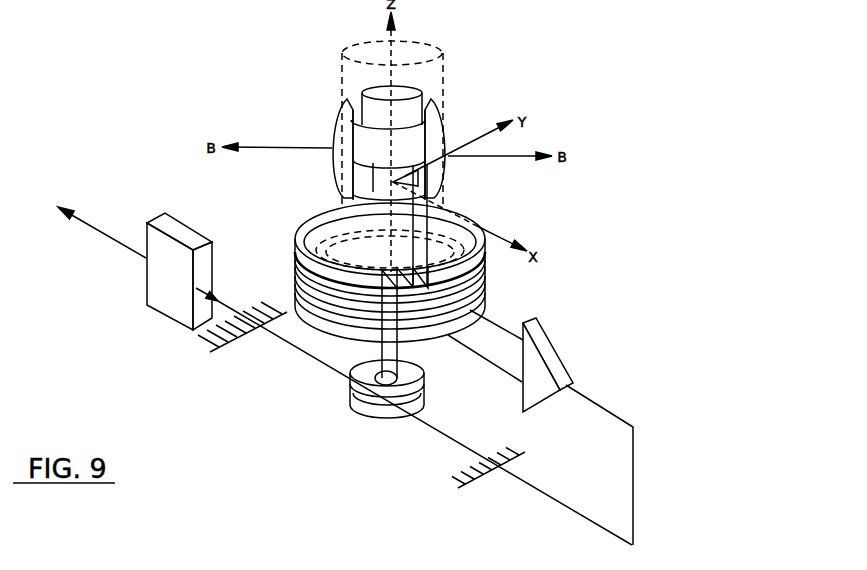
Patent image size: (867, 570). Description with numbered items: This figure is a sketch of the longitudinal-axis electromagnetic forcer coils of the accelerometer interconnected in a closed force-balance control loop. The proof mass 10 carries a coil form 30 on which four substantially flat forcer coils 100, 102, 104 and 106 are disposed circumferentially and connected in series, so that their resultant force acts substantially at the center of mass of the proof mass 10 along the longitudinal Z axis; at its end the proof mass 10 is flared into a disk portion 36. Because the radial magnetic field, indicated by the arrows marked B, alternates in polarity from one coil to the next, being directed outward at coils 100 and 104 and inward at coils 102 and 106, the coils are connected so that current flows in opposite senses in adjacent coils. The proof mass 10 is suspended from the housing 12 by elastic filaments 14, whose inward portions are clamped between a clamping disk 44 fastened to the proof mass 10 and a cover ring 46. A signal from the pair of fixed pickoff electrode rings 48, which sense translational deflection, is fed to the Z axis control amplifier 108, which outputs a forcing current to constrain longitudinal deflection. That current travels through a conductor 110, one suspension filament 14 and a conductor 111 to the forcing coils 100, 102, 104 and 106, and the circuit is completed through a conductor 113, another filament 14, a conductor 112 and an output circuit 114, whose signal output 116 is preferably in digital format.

The proof mass 10 is at (336, 57).
The coil form 30 is at (443, 90).
The forcer coil 106 is at (401, 90).
The forcer coil 100 is at (449, 176).
The forcer coil 104 is at (338, 141).
The forcer coil 102 is at (381, 172).
The fixed pickoff electrode rings 48 is at (331, 225).
The disk portion 36 is at (297, 298).
The conductor 111 is at (400, 348).
The conductor 113 is at (380, 349).
The clamping disk 44 is at (413, 373).
The cover ring 46 is at (362, 416).
The output circuit 114 is at (182, 303).
The signal output 116 is at (122, 244).
The conductor 112 is at (221, 298).
The filament 14 is at (289, 344).
The housing 12 is at (238, 339).
The Z axis control amplifier 108 is at (553, 361).
The conductor 110 is at (635, 470).